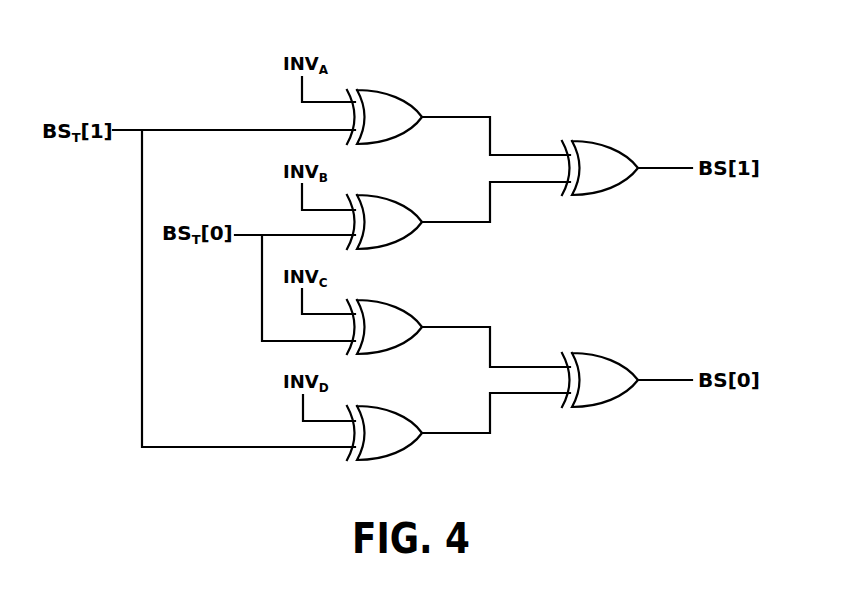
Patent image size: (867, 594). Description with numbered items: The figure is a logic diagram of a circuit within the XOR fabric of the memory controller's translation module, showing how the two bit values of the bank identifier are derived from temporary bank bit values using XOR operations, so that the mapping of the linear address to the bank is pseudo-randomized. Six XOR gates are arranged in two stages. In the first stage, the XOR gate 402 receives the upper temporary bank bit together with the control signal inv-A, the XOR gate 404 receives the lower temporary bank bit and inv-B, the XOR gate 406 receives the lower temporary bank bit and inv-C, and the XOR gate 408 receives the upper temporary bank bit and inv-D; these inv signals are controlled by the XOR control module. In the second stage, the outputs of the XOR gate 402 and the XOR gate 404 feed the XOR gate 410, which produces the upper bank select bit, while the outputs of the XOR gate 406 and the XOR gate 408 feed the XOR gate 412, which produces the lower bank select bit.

The XOR gate 402 is at (396, 90).
The XOR gate 404 is at (396, 195).
The XOR gate 406 is at (396, 300).
The XOR gate 408 is at (396, 406).
The XOR gate 410 is at (608, 141).
The XOR gate 412 is at (608, 353).